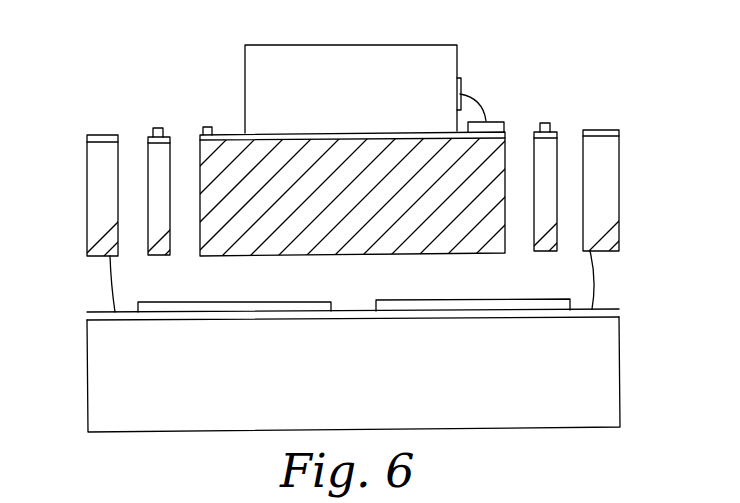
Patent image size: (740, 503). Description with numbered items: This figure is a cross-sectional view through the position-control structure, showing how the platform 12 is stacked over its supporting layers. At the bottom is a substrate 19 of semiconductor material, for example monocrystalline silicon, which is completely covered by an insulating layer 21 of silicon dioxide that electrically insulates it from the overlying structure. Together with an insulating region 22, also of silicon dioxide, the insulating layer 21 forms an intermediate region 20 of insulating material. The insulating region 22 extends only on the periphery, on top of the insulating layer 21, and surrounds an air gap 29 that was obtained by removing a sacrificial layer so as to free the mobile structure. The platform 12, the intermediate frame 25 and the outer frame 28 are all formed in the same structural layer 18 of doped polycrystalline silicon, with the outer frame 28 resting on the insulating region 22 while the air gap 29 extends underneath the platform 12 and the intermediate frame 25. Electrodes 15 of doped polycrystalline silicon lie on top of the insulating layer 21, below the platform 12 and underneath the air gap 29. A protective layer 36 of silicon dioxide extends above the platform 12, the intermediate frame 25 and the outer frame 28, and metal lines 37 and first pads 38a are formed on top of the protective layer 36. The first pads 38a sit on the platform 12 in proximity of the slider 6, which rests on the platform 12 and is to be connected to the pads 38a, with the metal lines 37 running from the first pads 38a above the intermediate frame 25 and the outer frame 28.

The slider 6 is at (352, 96).
The platform 12 is at (336, 223).
The electrodes 15 is at (208, 307).
The structural layer 18 is at (377, 210).
The substrate 19 is at (602, 393).
The intermediate region 20 is at (83, 310).
The insulating layer 21 is at (605, 313).
The insulating region 22 is at (97, 285).
The intermediate frame 25 is at (170, 158).
The outer frame 28 is at (90, 177).
The air gap 29 is at (336, 286).
The protective layer 36 is at (148, 138).
The metal lines 37 is at (153, 137).
The first pads 38a is at (493, 120).